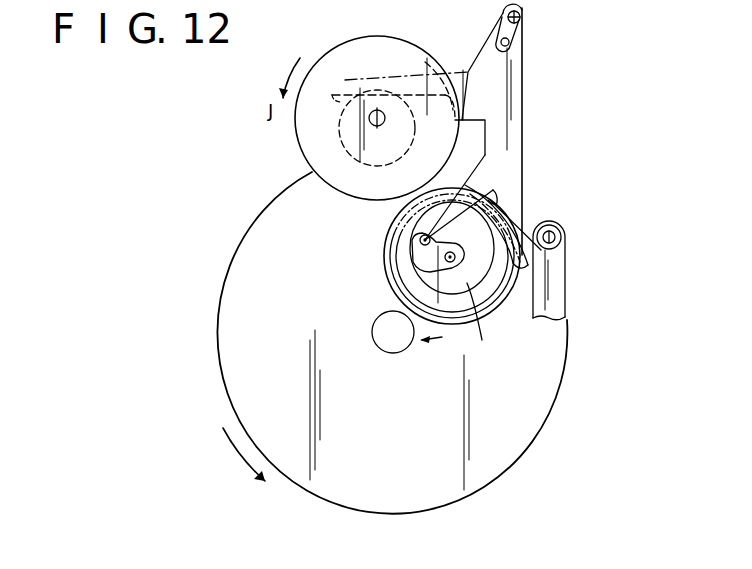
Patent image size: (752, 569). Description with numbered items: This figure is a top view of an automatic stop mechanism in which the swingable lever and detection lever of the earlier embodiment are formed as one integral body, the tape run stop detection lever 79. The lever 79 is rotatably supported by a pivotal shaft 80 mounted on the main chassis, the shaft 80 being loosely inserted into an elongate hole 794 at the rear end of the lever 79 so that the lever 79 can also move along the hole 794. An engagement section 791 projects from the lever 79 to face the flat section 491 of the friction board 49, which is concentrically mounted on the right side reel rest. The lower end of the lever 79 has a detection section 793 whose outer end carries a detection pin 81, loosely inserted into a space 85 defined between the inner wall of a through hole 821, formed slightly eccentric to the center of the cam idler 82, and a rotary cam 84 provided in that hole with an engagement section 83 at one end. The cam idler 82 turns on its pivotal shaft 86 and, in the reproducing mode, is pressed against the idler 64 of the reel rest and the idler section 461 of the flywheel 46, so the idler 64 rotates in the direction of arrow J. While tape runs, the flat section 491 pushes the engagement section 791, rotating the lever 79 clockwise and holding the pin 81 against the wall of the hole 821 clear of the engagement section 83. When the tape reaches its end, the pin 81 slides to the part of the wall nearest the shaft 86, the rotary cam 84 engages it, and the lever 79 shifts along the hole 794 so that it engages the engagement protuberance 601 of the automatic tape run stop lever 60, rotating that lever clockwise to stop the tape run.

The flywheel 46 is at (555, 405).
The friction board 49 is at (346, 163).
The automatic tape run stop lever 60 is at (566, 282).
The idler 64 is at (442, 62).
The tape run stop detection lever 79 is at (524, 118).
The pivotal shaft 80 is at (521, 17).
The detection pin 81 is at (413, 237).
The cam idler 82 is at (506, 318).
The engagement section 83 is at (413, 238).
The rotary cam 84 is at (423, 264).
The space 85 is at (478, 290).
The pivotal shaft 86 is at (455, 257).
The idler section 461 is at (391, 353).
The flat section 491 is at (352, 90).
The engagement protuberance 601 is at (561, 238).
The engagement section 791 is at (396, 77).
The detection section 793 is at (497, 191).
The elongate hole 794 is at (511, 43).
The through hole 821 is at (488, 323).